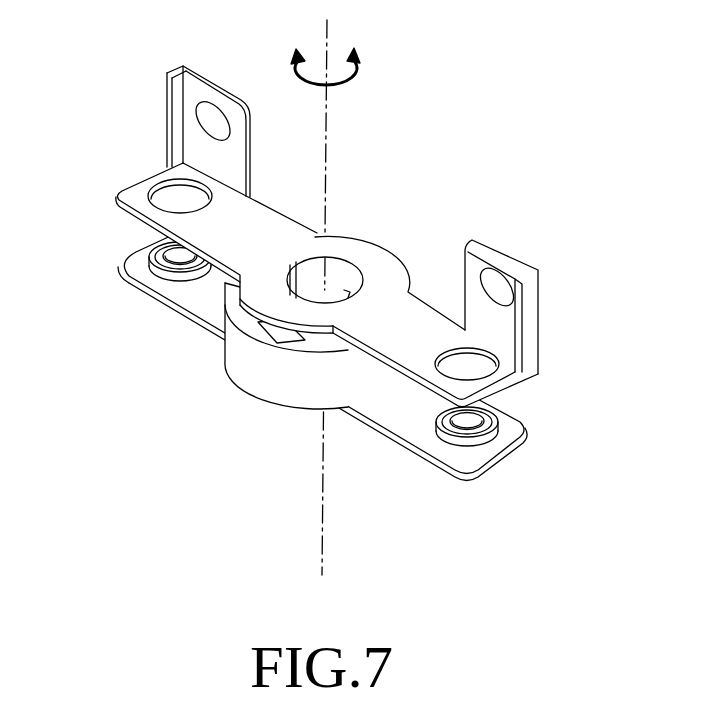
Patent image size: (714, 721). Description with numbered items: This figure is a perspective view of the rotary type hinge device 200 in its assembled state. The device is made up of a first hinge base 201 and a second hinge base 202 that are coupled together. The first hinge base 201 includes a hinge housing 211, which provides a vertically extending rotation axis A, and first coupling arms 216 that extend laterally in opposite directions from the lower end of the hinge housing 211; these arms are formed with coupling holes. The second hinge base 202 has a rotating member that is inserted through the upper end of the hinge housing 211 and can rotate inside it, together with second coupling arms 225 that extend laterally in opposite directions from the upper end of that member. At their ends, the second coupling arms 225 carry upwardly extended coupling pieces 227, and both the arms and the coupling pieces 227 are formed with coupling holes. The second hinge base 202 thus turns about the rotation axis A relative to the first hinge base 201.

The rotary type hinge device 200 is at (342, 287).
The first hinge base 201 is at (297, 381).
The second hinge base 202 is at (342, 236).
The hinge housing 211 is at (277, 388).
The first coupling arms 216 is at (186, 297).
The second coupling arms 225 is at (281, 223).
The coupling pieces 227 is at (167, 115).
The rotation axis A is at (328, 38).